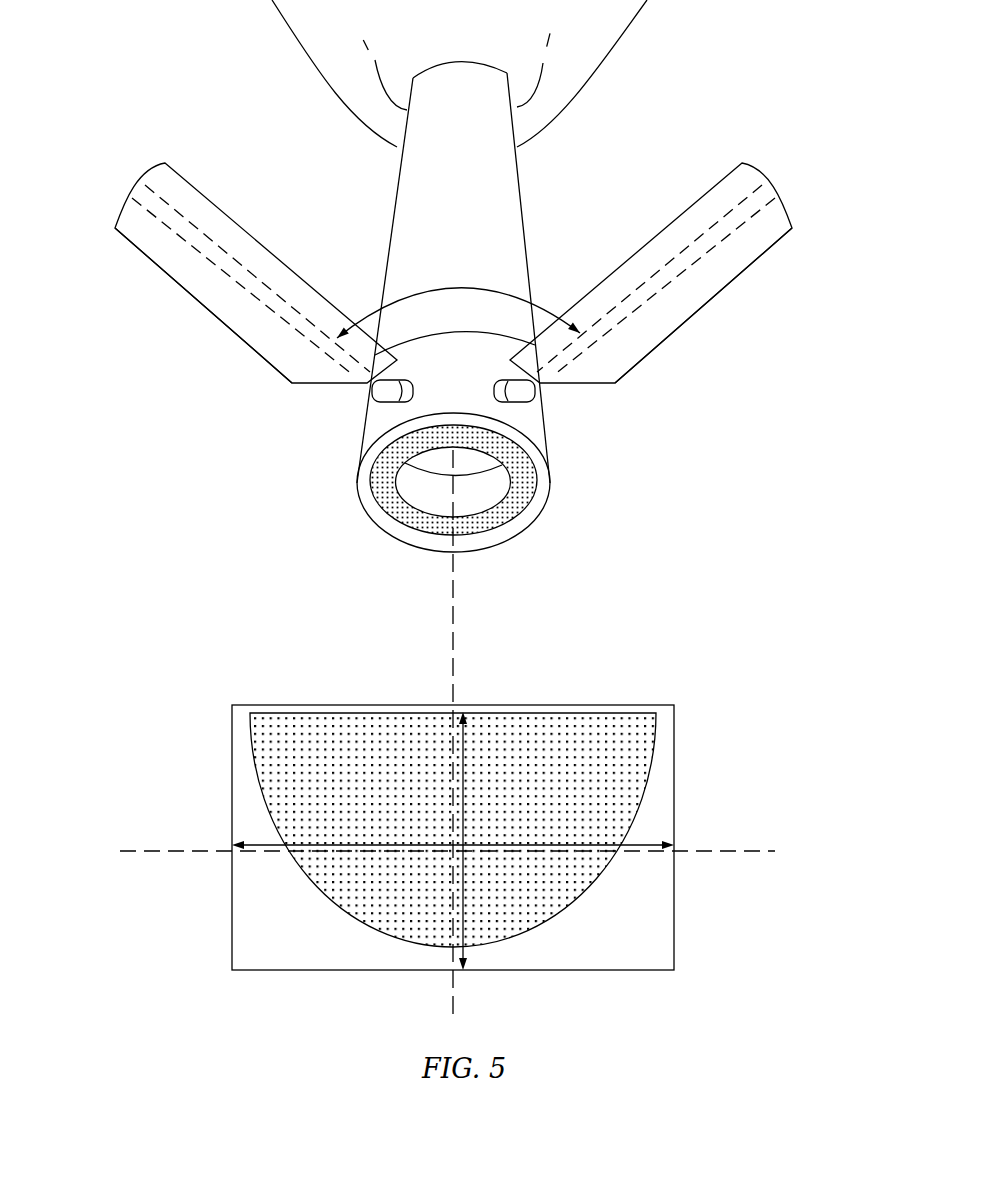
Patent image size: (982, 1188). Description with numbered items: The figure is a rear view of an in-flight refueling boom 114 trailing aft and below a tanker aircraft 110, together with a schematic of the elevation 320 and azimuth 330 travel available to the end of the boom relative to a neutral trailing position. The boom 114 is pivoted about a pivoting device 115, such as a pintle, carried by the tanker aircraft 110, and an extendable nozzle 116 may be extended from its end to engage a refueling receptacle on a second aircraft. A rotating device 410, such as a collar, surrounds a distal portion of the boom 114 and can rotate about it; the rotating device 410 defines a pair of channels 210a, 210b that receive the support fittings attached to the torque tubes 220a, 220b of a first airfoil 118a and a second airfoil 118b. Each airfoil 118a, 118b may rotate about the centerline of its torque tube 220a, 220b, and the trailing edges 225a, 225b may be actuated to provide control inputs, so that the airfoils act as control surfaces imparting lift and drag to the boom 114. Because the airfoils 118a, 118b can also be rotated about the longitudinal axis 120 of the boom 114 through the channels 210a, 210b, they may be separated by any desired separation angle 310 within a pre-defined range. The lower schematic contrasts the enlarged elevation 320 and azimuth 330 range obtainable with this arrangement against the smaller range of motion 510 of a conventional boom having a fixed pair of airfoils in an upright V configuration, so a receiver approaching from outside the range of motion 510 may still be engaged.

The tanker aircraft 110 is at (323, 22).
The in-flight refueling boom 114 is at (413, 193).
The pivoting device 115 is at (517, 53).
The extendable nozzle 116 is at (497, 522).
The first airfoil 118a is at (248, 317).
The second airfoil 118b is at (690, 292).
The longitudinal axis 120 is at (453, 616).
The first channel 210a is at (368, 403).
The second channel 210b is at (540, 408).
The first torque tube 220a is at (210, 265).
The second torque tube 220b is at (733, 232).
The first trailing edge 225a is at (203, 310).
The second trailing edge 225b is at (653, 357).
The separation angle 310 is at (475, 290).
The elevation 320 is at (465, 794).
The azimuth 330 is at (325, 844).
The rotating device 410 is at (387, 420).
The range of motion 510 is at (500, 887).